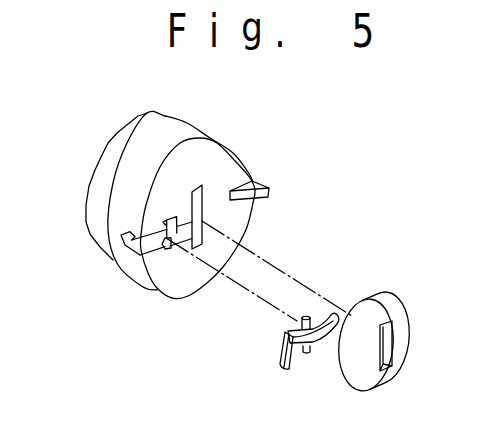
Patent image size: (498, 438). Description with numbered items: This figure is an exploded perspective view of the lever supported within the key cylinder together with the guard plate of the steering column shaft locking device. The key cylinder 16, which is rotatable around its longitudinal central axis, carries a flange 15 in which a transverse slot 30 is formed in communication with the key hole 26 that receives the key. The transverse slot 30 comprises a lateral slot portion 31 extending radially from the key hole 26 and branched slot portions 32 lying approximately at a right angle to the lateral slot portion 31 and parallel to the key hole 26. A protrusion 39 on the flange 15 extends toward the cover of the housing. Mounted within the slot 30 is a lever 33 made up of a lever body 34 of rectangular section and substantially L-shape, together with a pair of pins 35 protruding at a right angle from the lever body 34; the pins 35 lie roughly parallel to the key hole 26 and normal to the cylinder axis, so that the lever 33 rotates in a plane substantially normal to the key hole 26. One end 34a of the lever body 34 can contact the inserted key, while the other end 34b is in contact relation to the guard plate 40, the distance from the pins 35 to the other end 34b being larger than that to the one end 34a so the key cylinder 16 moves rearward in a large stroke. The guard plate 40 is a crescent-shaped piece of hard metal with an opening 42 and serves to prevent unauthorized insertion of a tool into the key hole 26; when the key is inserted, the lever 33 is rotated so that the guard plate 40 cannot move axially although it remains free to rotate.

The flange 15 is at (198, 137).
The key cylinder 16 is at (87, 228).
The key hole 26 is at (197, 207).
The transverse slot 30 is at (122, 250).
The lateral slot portion 31 is at (161, 253).
The branched slot portions 32 is at (168, 248).
The lever 33 is at (268, 364).
The lever body 34 is at (299, 358).
The one end 34a is at (328, 312).
The other end 34b is at (283, 352).
The pins 35 is at (309, 353).
The protrusion 39 is at (259, 182).
The guard plate 40 is at (391, 386).
The opening 42 is at (391, 342).